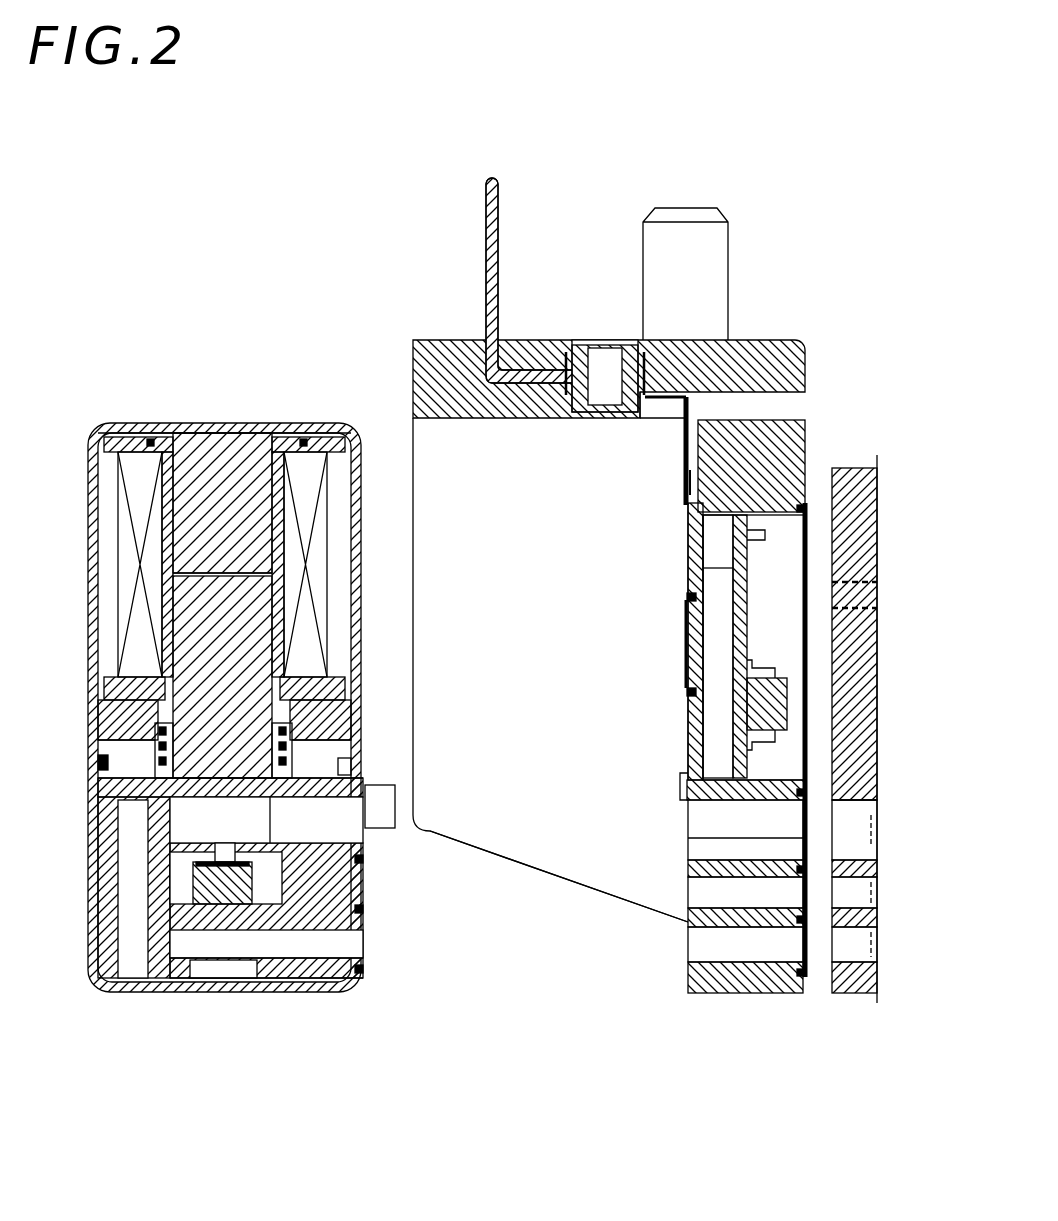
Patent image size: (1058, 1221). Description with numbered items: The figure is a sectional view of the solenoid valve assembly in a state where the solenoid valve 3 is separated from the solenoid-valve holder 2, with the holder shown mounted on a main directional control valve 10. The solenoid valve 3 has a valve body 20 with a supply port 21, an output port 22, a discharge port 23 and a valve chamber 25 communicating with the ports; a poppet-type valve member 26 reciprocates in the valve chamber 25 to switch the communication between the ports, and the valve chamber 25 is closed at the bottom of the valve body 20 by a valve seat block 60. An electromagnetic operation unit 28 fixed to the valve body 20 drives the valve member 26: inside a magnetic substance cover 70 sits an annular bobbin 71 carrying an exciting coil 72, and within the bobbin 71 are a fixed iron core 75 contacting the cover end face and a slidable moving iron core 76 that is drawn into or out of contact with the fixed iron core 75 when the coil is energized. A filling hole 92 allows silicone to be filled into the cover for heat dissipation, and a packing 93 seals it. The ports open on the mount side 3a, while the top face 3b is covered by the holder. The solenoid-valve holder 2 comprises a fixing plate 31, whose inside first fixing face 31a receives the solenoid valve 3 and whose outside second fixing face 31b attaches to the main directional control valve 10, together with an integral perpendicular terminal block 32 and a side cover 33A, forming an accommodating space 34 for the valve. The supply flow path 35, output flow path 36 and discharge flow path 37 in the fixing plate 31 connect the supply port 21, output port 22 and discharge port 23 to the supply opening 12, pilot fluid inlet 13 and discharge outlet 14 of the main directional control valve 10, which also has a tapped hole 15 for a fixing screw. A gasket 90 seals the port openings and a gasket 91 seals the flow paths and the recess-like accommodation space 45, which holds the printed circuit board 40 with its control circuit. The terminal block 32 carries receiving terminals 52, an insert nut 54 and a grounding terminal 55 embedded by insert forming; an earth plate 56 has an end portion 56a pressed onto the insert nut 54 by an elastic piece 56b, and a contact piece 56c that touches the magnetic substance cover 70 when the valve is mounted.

The solenoid-valve holder 2 is at (768, 212).
The solenoid valve 3 is at (192, 395).
The mount side 3a is at (362, 740).
The top face 3b is at (272, 432).
The main directional control valve 10 is at (860, 450).
The supply opening 12 is at (866, 945).
The pilot fluid inlet 13 is at (866, 888).
The discharge outlet 14 is at (866, 830).
The tapped hole 15 is at (870, 595).
The valve body 20 is at (105, 905).
The supply port 21 is at (355, 942).
The output port 22 is at (355, 895).
The discharge port 23 is at (355, 838).
The valve chamber 25 is at (185, 875).
The valve member 26 is at (215, 905).
The electromagnetic operation unit 28 is at (85, 525).
The fixing plate 31 is at (748, 988).
The first fixing face 31a is at (690, 716).
The second fixing face 31b is at (855, 762).
The terminal block 32 is at (443, 345).
The side cover 33A is at (516, 862).
The accommodating space 34 is at (550, 657).
The supply flow path 35 is at (692, 947).
The output flow path 36 is at (690, 890).
The discharge flow path 37 is at (695, 820).
The printed circuit board 40 is at (765, 630).
The accommodation space 45 is at (835, 545).
The receiving terminal 52 is at (680, 235).
The insert nut 54 is at (598, 352).
The grounding terminal 55 is at (500, 212).
The earth plate 56 is at (668, 432).
The end portion 56a is at (664, 380).
The elastic piece 56b is at (692, 455).
The contact piece 56c is at (688, 470).
The valve seat block 60 is at (232, 978).
The magnetic substance cover 70 is at (342, 438).
The bobbin 71 is at (130, 452).
The exciting coil 72 is at (125, 600).
The fixed iron core 75 is at (236, 438).
The moving iron core 76 is at (205, 640).
The gasket 90 is at (362, 978).
The gasket 91 is at (806, 980).
The filling hole 92 is at (355, 628).
The packing 93 is at (688, 594).